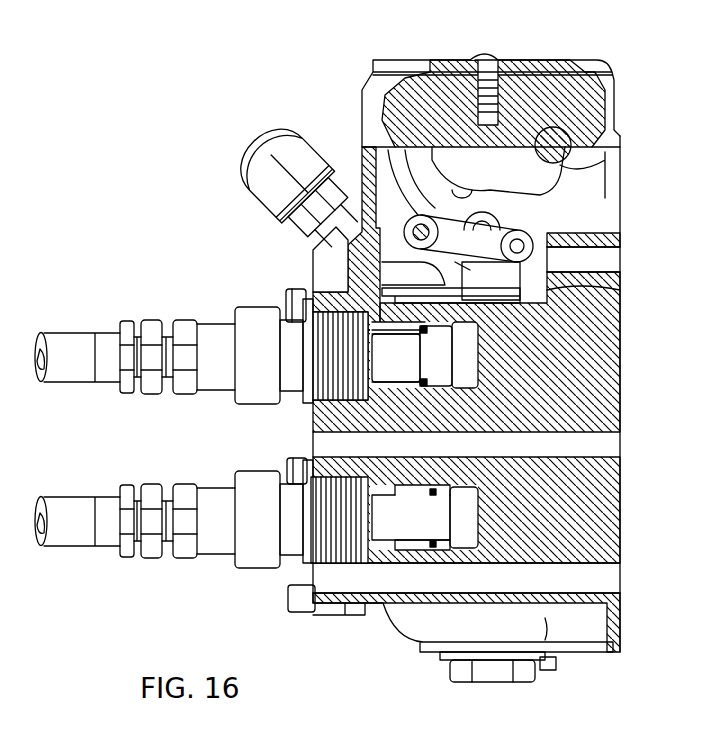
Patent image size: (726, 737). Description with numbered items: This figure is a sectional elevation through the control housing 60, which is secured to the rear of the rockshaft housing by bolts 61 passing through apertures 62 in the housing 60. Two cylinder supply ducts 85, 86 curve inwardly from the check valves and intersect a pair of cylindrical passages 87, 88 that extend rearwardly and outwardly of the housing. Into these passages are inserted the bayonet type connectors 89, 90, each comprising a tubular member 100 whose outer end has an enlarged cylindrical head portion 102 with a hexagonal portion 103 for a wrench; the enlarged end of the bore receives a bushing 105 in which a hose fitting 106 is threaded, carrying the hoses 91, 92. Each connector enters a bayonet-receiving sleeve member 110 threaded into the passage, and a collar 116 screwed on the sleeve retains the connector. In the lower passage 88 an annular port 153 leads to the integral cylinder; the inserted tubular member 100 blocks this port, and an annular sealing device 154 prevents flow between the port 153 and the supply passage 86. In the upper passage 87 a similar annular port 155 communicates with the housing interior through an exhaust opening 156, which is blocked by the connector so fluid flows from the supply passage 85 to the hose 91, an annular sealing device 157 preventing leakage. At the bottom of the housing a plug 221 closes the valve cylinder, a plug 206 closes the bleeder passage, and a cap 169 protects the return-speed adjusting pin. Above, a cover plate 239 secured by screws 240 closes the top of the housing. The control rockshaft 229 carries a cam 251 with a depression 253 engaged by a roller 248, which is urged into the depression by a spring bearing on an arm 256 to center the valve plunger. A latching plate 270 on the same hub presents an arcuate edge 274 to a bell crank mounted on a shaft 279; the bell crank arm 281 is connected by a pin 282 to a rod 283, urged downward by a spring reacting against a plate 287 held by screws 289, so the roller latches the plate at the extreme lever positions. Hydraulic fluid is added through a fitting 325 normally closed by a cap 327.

The control housing 60 is at (365, 98).
The bolts 61 is at (296, 298).
The apertures 62 is at (606, 264).
The cylinder supply duct 85 is at (478, 366).
The cylinder supply duct 86 is at (465, 488).
The cylindrical passage 87 is at (412, 380).
The cylindrical passage 88 is at (377, 538).
The bayonet type connector 89 is at (206, 314).
The bayonet type connector 90 is at (208, 480).
The hose 91 is at (52, 335).
The hose 92 is at (62, 498).
The tubular member 100 is at (446, 375).
The enlarged cylindrical head portion 102 is at (224, 544).
The hexagonal portion 103 is at (186, 548).
The bushing 105 is at (153, 547).
The hose fitting 106 is at (128, 495).
The bayonet-receiving sleeve member 110 is at (282, 349).
The collar 116 is at (257, 402).
The annular port 153 is at (403, 556).
The annular sealing device 154 is at (432, 488).
The annular port 155 is at (383, 378).
The opening 156 is at (385, 297).
The annular sealing device 157 is at (437, 356).
The cap 169 is at (300, 600).
The plug 206 is at (556, 664).
The plug 221 is at (500, 682).
The control rockshaft 229 is at (598, 160).
The cover plate 239 is at (402, 62).
The screws 240 is at (487, 52).
The roller 248 is at (478, 217).
The cam 251 is at (485, 195).
The depression 253 is at (495, 230).
The arm 256 is at (388, 342).
The latching plate 270 is at (509, 166).
The arcuate edge 274 is at (432, 170).
The shaft 279 is at (418, 240).
The arm 281 is at (469, 238).
The pin 282 is at (525, 245).
The rod 283 is at (491, 281).
The plate 287 is at (583, 259).
The screws 289 is at (480, 256).
The fitting 325 is at (300, 228).
The cap 327 is at (252, 190).